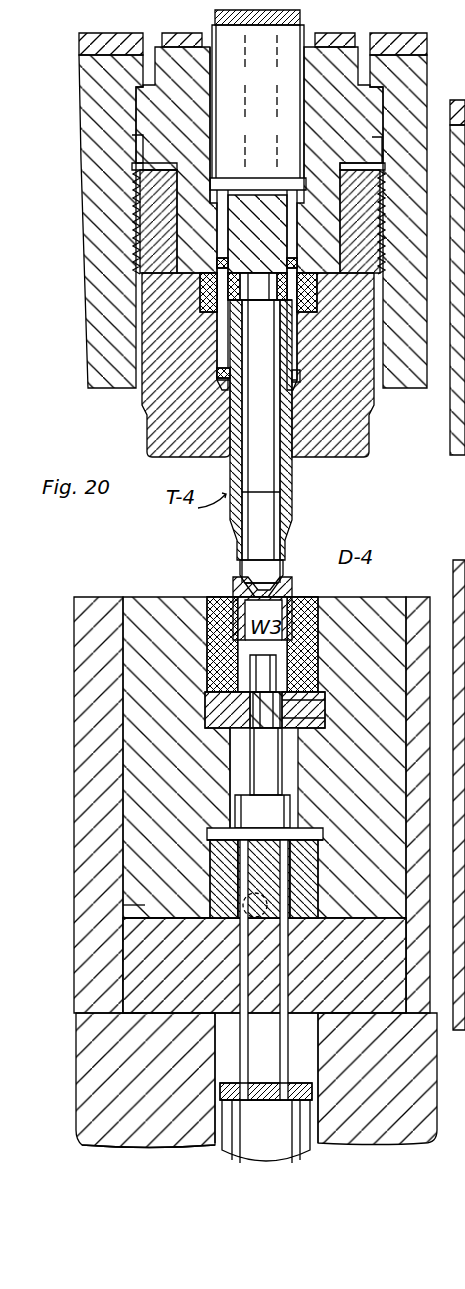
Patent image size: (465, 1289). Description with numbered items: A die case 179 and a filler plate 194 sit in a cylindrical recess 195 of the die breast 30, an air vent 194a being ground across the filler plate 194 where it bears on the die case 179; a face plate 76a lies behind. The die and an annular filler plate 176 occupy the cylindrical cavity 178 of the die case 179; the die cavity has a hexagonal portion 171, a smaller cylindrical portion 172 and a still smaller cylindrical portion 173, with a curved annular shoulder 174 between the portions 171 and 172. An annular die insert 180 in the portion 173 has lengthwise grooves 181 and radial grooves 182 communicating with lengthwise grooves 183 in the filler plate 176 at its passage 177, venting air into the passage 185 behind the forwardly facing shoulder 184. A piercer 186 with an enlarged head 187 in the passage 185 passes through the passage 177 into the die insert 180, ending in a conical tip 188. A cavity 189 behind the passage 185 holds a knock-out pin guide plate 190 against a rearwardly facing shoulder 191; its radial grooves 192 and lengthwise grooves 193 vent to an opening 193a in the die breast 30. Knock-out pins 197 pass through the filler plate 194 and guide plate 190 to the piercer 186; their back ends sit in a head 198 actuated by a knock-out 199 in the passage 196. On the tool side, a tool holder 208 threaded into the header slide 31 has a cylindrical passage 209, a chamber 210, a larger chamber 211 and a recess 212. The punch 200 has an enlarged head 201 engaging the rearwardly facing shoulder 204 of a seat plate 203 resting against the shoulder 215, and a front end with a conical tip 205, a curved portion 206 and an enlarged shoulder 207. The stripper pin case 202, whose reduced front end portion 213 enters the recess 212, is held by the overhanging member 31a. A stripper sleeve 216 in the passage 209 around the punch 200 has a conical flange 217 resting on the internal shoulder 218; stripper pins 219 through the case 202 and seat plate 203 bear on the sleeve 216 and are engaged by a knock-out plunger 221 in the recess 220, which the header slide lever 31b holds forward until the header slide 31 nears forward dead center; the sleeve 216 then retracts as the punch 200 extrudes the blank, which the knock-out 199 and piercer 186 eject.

The die breast 30 is at (84, 612).
The header slide 31 is at (92, 72).
The overhanging member 31a is at (176, 33).
The header slide lever 31b is at (300, 14).
The face plate 76a is at (135, 1146).
The hexagonal portion 171 is at (294, 597).
The cylindrical portion 172 is at (306, 600).
The cylindrical portion 173 is at (212, 634).
The curved annular shoulder 174 is at (232, 596).
The annular filler plate 176 is at (300, 710).
The central passage 177 is at (232, 712).
The cylindrical cavity 178 is at (254, 696).
The die case 179 is at (154, 608).
The annular die insert 180 is at (253, 712).
The lengthwise grooves 181 is at (278, 670).
The radial grooves 182 is at (320, 702).
The lengthwise grooves 183 is at (320, 726).
The forwardly facing shoulder 184 is at (232, 740).
The cylindrical passage 185 is at (298, 773).
The piercer 186 is at (262, 765).
The enlarged head 187 is at (291, 812).
The conical tip 188 is at (316, 642).
The cylindrical cavity 189 is at (226, 866).
The knock-out pin guide plate 190 is at (306, 872).
The rearwardly facing shoulder 191 is at (240, 832).
The radial grooves 192 is at (324, 836).
The lengthwise grooves 193 is at (300, 902).
The opening 193a is at (254, 918).
The filler plate 194 is at (348, 1014).
The air vent 194a is at (134, 924).
The cylindrical recess 195 is at (130, 910).
The passage 196 is at (318, 1073).
The knock-out pins 197 is at (226, 970).
The head 198 is at (312, 1094).
The knock-out 199 is at (310, 1158).
The punch 200 is at (270, 446).
The enlarged head 201 is at (268, 276).
The stripper pin case 202 is at (165, 103).
The punch seat plate 203 is at (206, 290).
The rearwardly facing shoulder 204 is at (300, 310).
The conical tip 205 is at (250, 590).
The curved portion 206 is at (246, 560).
The enlarged shoulder 207 is at (288, 560).
The tool holder 208 is at (380, 457).
The cylindrical passage 209 is at (294, 400).
The chamber 210 is at (291, 352).
The cylindrical chamber 211 is at (316, 292).
The cylindrical recess 212 is at (381, 236).
The front end portion 213 is at (187, 233).
The rearwardly facing shoulder 215 is at (250, 322).
The stripper sleeve 216 is at (282, 500).
The conical back end flange 217 is at (215, 390).
The internal shoulder 218 is at (300, 378).
The stripper pins 219 is at (222, 262).
The cylindrical recess 220 is at (209, 120).
The knock-out plunger 221 is at (282, 111).